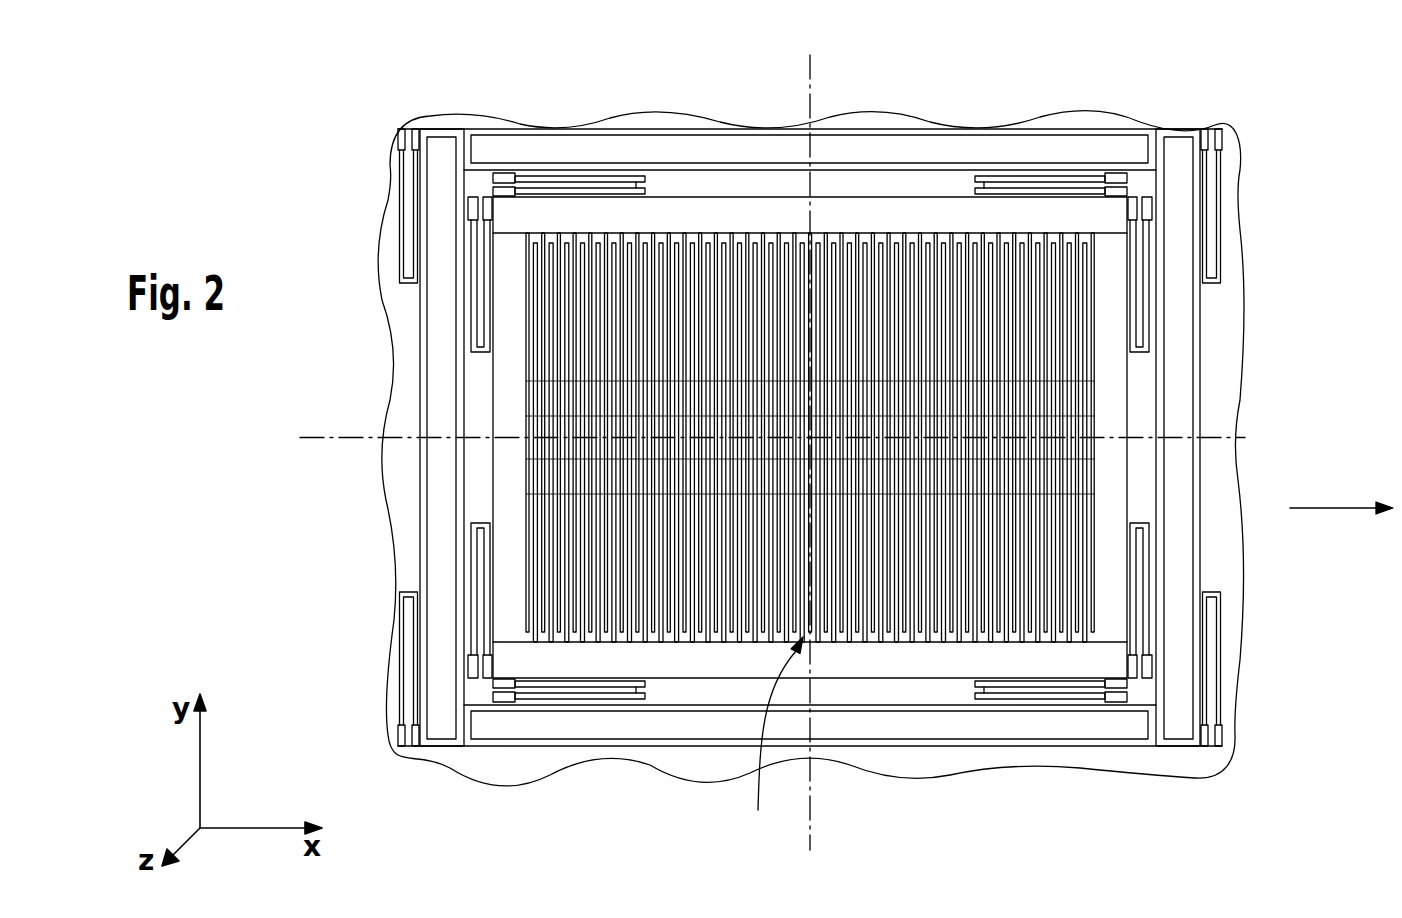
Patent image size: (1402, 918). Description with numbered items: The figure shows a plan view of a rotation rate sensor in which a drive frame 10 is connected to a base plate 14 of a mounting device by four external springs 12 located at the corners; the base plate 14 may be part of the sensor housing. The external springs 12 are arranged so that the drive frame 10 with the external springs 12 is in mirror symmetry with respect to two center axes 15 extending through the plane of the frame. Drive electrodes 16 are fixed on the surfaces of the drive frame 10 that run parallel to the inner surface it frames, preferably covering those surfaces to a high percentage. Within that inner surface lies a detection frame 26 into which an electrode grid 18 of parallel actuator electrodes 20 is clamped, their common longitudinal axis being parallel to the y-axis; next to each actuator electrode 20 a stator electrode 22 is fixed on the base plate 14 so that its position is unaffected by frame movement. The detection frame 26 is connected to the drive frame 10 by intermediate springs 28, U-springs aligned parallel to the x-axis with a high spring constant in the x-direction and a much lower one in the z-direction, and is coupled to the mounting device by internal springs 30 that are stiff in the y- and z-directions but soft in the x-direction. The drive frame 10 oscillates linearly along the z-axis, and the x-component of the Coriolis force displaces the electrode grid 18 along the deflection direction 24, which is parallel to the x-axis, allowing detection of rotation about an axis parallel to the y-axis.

The drive frame 10 is at (955, 135).
The external spring 12 is at (400, 211).
The base plate 14 is at (635, 128).
The center axes 15 is at (341, 436).
The drive electrode 16 is at (873, 152).
The electrode grid 18 is at (772, 742).
The actuator electrodes 20 is at (730, 641).
The stator electrode 22 is at (985, 641).
The deflection direction 24 is at (1341, 481).
The detection frame 26 is at (733, 218).
The intermediate spring 28 is at (1043, 176).
The internal spring 30 is at (475, 292).